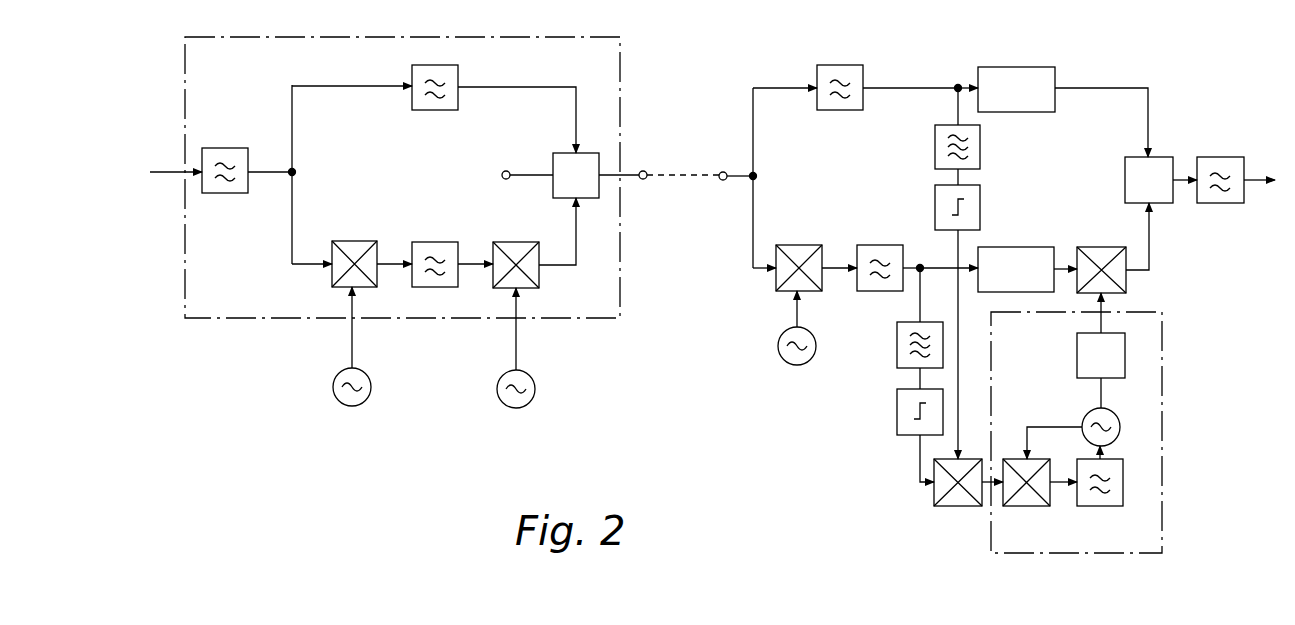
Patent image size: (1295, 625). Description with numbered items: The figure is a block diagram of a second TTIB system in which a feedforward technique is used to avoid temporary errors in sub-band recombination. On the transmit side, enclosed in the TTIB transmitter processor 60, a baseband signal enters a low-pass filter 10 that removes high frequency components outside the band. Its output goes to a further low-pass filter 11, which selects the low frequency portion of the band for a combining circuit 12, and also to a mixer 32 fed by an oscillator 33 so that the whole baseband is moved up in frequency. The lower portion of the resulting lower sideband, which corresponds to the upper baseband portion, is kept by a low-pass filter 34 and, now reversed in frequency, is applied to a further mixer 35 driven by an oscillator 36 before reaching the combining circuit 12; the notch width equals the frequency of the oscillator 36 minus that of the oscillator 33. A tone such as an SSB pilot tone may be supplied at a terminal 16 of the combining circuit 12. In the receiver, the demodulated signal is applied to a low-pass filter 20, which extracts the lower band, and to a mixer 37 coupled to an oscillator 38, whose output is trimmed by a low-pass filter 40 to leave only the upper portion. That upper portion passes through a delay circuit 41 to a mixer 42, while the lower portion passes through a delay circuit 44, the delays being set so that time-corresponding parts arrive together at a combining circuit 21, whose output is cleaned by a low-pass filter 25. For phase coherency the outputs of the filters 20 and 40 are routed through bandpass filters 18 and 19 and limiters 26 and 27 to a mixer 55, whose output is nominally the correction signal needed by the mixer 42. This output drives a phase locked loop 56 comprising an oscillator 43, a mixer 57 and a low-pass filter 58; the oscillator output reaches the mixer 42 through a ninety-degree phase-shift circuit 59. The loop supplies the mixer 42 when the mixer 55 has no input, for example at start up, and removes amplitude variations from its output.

The low-pass filter 10 is at (240, 148).
The further low-pass filter 11 is at (445, 110).
The combining circuit 12 is at (560, 153).
The terminal 16 is at (506, 171).
The bandpass filter 18 is at (980, 137).
The bandpass filter 19 is at (897, 346).
The low-pass filter 20 is at (843, 65).
The combining circuit 21 is at (1132, 157).
The low-pass filter 25 is at (1222, 157).
The limiter 26 is at (980, 192).
The limiter 27 is at (897, 410).
The mixer 32 is at (352, 241).
The oscillator 33 is at (340, 401).
The low-pass filter 34 is at (435, 242).
The further mixer 35 is at (530, 224).
The oscillator 36 is at (510, 407).
The mixer 37 is at (820, 229).
The oscillator 38 is at (780, 340).
The low-pass filter 40 is at (894, 227).
The delay circuit 41 is at (1020, 247).
The mixer 42 is at (1100, 247).
The oscillator 43 is at (1082, 418).
The delay circuit 44 is at (1020, 67).
The mixer 55 is at (958, 506).
The phase locked loop 56 is at (1047, 553).
The mixer 57 is at (1027, 506).
The low-pass filter 58 is at (1112, 506).
The 90° phase-shift circuit 59 is at (1077, 357).
The TTIB transmitter processor 60 is at (223, 318).